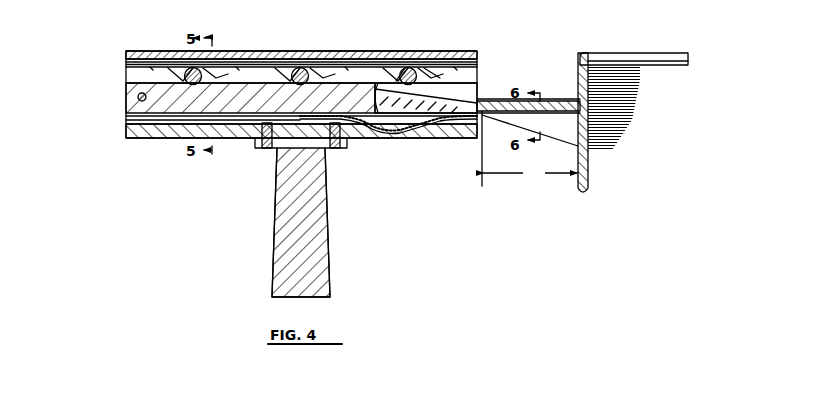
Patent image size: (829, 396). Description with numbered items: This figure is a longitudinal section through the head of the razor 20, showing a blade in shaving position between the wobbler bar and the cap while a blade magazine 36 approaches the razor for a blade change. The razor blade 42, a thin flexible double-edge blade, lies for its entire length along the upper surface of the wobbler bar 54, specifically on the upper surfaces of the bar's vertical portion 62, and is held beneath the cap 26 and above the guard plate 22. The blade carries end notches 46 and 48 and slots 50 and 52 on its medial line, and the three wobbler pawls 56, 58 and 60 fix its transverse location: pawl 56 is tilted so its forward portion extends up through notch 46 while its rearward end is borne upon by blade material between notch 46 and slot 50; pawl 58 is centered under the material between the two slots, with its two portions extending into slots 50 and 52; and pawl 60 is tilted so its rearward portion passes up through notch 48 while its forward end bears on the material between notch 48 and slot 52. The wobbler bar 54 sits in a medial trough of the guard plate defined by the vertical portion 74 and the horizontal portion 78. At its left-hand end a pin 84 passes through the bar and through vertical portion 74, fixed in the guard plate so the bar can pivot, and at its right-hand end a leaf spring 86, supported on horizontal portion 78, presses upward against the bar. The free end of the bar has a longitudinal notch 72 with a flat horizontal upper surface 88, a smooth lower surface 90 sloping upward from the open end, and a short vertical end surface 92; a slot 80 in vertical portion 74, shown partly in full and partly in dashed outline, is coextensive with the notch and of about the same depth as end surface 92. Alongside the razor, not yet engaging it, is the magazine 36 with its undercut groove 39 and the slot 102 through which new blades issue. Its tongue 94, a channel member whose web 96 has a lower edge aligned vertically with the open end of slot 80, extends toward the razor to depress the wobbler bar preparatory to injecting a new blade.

The razor 20 is at (182, 208).
The guard plate 22 is at (168, 138).
The cap 26 is at (328, 40).
The blade injector magazine 36 is at (624, 50).
The undercut groove 39 is at (645, 62).
The razor blade 42 is at (140, 56).
The end notch 46 is at (150, 64).
The end notch 48 is at (450, 64).
The slot 50 is at (235, 65).
The slot 52 is at (349, 66).
The wobbler bar 54 is at (127, 128).
The wobbler pawl 56 is at (180, 70).
The wobbler pawl 58 is at (290, 70).
The wobbler pawl 60 is at (405, 70).
The vertical portion of the wobbler bar 62 is at (127, 72).
The longitudinal notch 72 is at (463, 64).
The vertical portion of the guard plate 74 is at (125, 113).
The horizontal portion of the guard plate 78 is at (237, 136).
The slot 80 is at (426, 91).
The pin 84 is at (118, 91).
The spring 86 is at (440, 122).
The upper surface of the notch 88 is at (479, 80).
The lower surface of the notch 90 is at (486, 101).
The vertical end surface 92 is at (378, 105).
The tongue 94 is at (563, 88).
The web 96 is at (549, 101).
The slot 102 is at (580, 64).